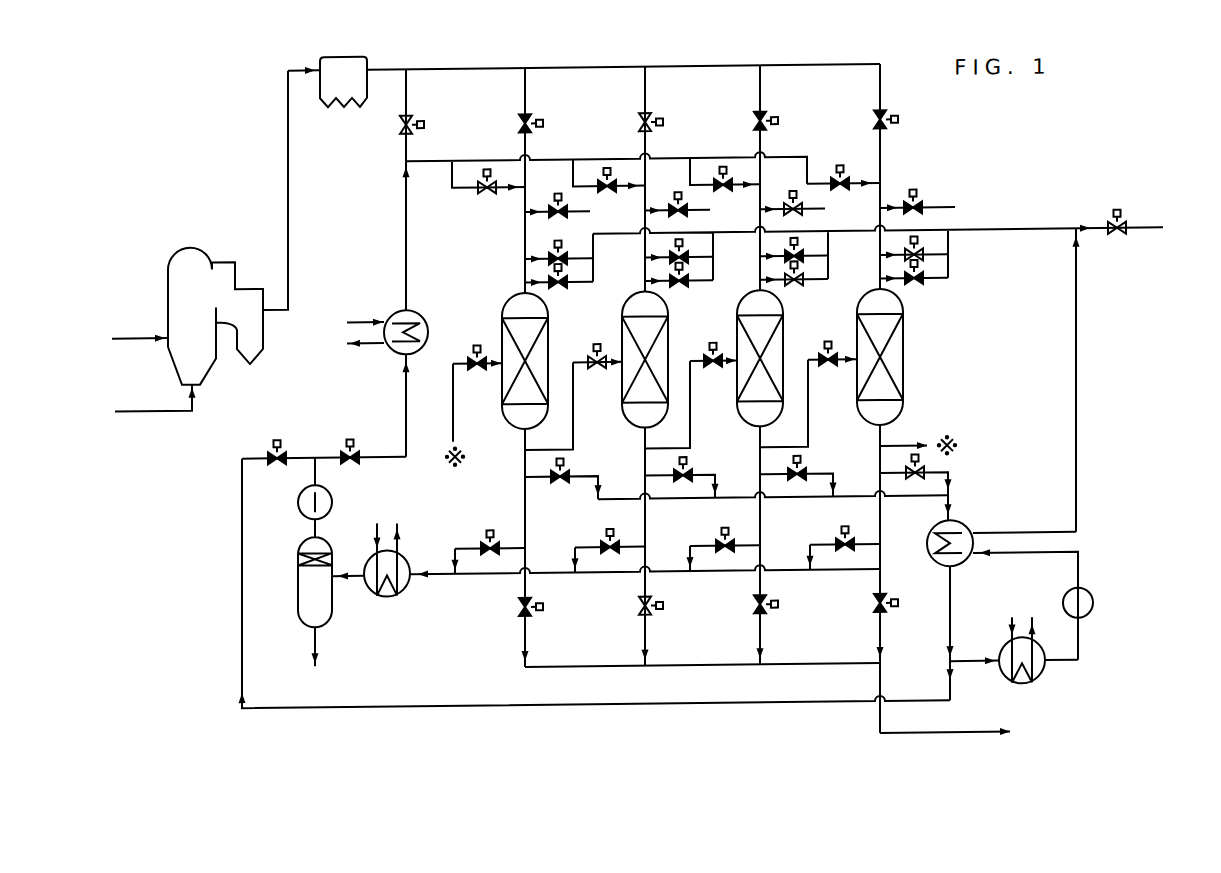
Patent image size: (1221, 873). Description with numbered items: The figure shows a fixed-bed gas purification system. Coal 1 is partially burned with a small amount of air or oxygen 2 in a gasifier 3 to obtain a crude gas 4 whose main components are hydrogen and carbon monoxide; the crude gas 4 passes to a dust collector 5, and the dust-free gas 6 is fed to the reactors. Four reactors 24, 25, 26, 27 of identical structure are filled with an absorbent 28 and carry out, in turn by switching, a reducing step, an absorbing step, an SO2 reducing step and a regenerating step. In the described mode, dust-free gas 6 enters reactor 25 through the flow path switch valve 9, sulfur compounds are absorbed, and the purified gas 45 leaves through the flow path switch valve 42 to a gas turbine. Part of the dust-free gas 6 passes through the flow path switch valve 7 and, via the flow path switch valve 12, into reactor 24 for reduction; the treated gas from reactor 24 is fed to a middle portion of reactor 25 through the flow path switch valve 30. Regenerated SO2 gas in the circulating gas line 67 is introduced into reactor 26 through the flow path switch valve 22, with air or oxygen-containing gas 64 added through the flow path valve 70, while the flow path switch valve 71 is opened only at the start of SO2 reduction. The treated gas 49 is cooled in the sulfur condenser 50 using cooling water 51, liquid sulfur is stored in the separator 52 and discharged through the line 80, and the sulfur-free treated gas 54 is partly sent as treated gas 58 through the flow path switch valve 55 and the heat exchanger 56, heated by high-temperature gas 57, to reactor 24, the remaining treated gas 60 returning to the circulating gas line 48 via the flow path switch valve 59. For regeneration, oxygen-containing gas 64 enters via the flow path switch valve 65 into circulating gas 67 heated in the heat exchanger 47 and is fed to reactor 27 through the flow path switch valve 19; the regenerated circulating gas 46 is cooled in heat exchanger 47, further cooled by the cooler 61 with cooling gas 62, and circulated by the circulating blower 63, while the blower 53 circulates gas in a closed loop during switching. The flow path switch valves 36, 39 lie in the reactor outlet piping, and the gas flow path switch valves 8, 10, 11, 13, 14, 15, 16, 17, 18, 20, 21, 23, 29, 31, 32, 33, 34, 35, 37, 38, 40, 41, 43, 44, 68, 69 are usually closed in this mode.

The coal 1 is at (140, 333).
The air or oxygen 2 is at (150, 406).
The gasifier 3 is at (197, 256).
The crude gas 4 is at (288, 153).
The dust collector 5 is at (330, 62).
The dust-free gas 6 is at (390, 67).
The flow path switch valve 7 is at (423, 120).
The gas flow path switch valve 8 is at (542, 119).
The flow path switch valve 9 is at (662, 119).
The gas flow path switch valve 10 is at (777, 119).
The gas flow path switch valve 11 is at (897, 119).
The flow path switch valve 12 is at (480, 168).
The gas flow path switch valve 13 is at (602, 168).
The gas flow path switch valve 14 is at (723, 168).
The gas flow path switch valve 15 is at (838, 168).
The gas flow path switch valve 16 is at (558, 240).
The gas flow path switch valve 17 is at (686, 242).
The gas flow path switch valve 18 is at (801, 242).
The flow path switch valve 19 is at (921, 242).
The gas flow path switch valve 20 is at (560, 288).
The gas flow path switch valve 21 is at (680, 288).
The flow path switch valve 22 is at (795, 288).
The gas flow path switch valve 23 is at (918, 288).
The reactor 24 is at (515, 300).
The reactor 25 is at (637, 300).
The reactor 26 is at (752, 300).
The reactor 27 is at (872, 300).
The absorbent 28 is at (857, 383).
The gas flow path switch valve 29 is at (477, 344).
The flow path switch valve 30 is at (597, 344).
The gas flow path switch valve 31 is at (712, 344).
The gas flow path switch valve 32 is at (828, 344).
The gas flow path switch valve 33 is at (563, 459).
The gas flow path switch valve 34 is at (686, 459).
The gas flow path switch valve 35 is at (800, 459).
The flow path switch valve 36 is at (922, 462).
The gas flow path switch valve 37 is at (488, 535).
The gas flow path switch valve 38 is at (607, 530).
The flow path switch valve 39 is at (722, 530).
The gas flow path switch valve 40 is at (842, 530).
The gas flow path switch valve 41 is at (544, 606).
The flow path switch valve 42 is at (664, 606).
The gas flow path switch valve 43 is at (779, 606).
The gas flow path switch valve 44 is at (899, 606).
The purified gas 45 is at (972, 736).
The regenerated circulating gas 46 is at (956, 504).
The heat exchanger 47 is at (965, 565).
The circulating gas line 48 is at (952, 642).
The treated gas 49 is at (437, 575).
The sulfur condenser 50 is at (383, 596).
The cooling water 51 is at (375, 533).
The separator 52 is at (300, 592).
The blower 53 is at (298, 499).
The sulfur-free treated gas 54 is at (316, 470).
The flow path switch valve 55 is at (352, 436).
The heat exchanger 56 is at (420, 310).
The high-temperature gas 57 is at (357, 319).
The treated gas 58 is at (406, 226).
The flow path switch valve 59 is at (279, 436).
The treated gas 60 is at (242, 574).
The cooler 61 is at (1040, 682).
The cooling gas 62 is at (1034, 626).
The circulating blower 63 is at (1093, 608).
The air or oxygen-containing gas 64 is at (1163, 212).
The flow path switch valve 65 is at (1118, 215).
The circulating gas line 67 is at (1042, 234).
The gas flow path switch valve 68 is at (558, 193).
The gas flow path switch valve 69 is at (678, 193).
The flow path valve 70 is at (793, 193).
The flow path switch valve 71 is at (911, 193).
The line 80 is at (322, 648).